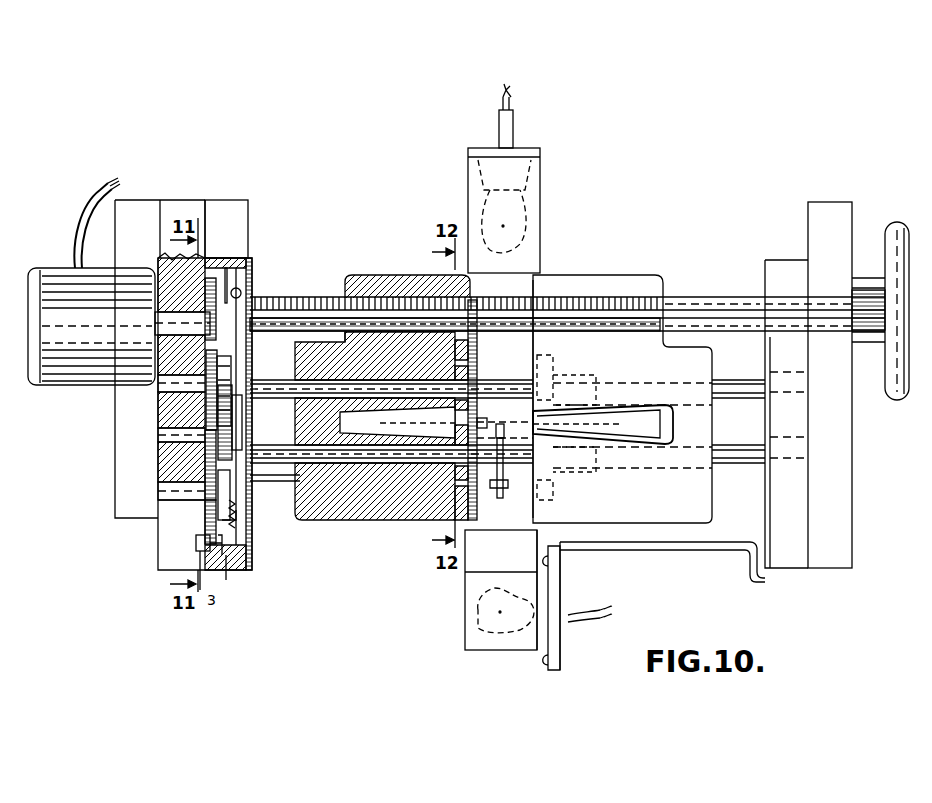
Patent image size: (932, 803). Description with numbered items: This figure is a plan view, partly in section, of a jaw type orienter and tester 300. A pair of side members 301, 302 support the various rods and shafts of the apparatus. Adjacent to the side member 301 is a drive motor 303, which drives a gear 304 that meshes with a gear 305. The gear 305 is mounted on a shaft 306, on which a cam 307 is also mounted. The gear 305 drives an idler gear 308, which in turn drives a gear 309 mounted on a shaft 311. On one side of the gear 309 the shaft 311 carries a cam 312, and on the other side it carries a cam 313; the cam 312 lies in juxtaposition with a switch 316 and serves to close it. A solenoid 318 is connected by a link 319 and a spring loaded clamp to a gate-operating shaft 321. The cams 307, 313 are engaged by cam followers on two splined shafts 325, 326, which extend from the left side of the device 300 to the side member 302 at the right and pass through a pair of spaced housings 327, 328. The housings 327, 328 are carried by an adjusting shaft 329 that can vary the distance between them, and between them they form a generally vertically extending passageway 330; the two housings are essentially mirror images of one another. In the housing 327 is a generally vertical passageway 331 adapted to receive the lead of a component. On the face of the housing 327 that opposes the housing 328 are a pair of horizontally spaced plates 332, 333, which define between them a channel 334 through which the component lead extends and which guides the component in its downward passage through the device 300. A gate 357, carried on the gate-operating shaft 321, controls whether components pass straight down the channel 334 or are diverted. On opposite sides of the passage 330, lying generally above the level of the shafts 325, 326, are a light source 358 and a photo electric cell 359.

The jaw type orienter and tester 300 is at (662, 218).
The side member 301 is at (172, 208).
The side member 302 is at (826, 212).
The drive motor 303 is at (104, 334).
The gear 304 is at (190, 290).
The gear 305 is at (200, 390).
The shaft 306 is at (198, 378).
The cam 307 is at (228, 366).
The idler gear 308 is at (202, 433).
The gear 309 is at (202, 460).
The shaft 311 is at (166, 484).
The cam 312 is at (200, 505).
The cam 313 is at (236, 532).
The switch 316 is at (194, 543).
The solenoid 318 is at (232, 210).
The link 319 is at (240, 296).
The gate-operating shaft 321 is at (262, 476).
The splined shaft 325 is at (262, 386).
The splined shaft 326 is at (262, 444).
The housing 327 is at (388, 520).
The housing 328 is at (698, 516).
The adjusting shaft 329 is at (697, 303).
The passageway 330 is at (515, 351).
The passageway 331 is at (348, 440).
The plate 332 is at (470, 322).
The plate 333 is at (494, 545).
The channel 334 is at (484, 414).
The gate 357 is at (500, 498).
The light source 358 is at (465, 626).
The photo electric cell 359 is at (522, 236).